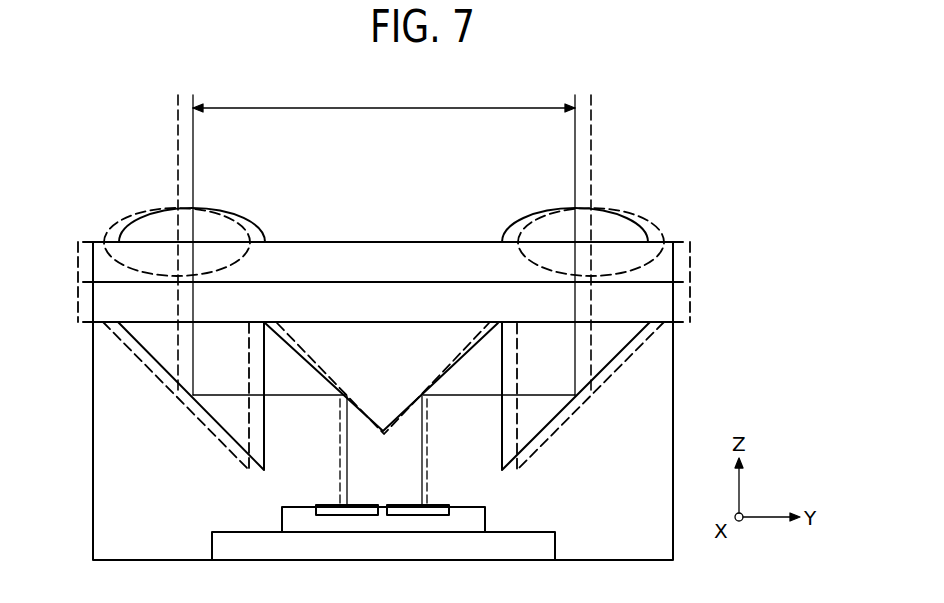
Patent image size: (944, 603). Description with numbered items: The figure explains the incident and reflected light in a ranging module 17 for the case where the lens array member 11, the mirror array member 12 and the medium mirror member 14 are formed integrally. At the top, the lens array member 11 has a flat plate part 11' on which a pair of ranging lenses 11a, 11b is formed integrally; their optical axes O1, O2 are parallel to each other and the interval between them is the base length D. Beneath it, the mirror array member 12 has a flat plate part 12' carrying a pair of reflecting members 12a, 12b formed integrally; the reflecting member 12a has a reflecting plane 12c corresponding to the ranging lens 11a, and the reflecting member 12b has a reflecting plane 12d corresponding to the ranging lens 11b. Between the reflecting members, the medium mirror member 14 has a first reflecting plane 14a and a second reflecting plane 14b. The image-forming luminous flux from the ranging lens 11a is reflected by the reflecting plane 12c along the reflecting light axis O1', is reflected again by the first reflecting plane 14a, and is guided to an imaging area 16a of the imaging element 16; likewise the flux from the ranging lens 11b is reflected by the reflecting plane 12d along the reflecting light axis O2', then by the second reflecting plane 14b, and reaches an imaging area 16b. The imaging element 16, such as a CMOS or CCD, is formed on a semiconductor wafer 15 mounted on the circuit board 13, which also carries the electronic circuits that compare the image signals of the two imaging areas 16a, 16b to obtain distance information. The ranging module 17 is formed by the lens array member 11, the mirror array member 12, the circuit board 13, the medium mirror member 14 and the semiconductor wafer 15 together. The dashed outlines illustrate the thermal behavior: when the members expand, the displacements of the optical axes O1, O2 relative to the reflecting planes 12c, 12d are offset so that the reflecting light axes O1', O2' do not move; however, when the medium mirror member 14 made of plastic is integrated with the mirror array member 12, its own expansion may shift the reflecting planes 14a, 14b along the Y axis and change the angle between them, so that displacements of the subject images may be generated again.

The lens array member 11 is at (352, 262).
The ranging lens 11a is at (160, 216).
The ranging lens 11b is at (656, 230).
The flat plate part 11' is at (384, 235).
The mirror array member 12 is at (352, 305).
The flat plate part 12' is at (407, 282).
The reflecting member 12a is at (163, 347).
The reflecting member 12b is at (605, 345).
The reflecting plane 12c is at (215, 426).
The reflecting plane 12d is at (570, 410).
The circuit board 13 is at (545, 548).
The medium mirror member 14 is at (335, 340).
The first reflecting plane 14a is at (368, 422).
The second reflecting plane 14b is at (400, 422).
The semiconductor wafer 15 is at (472, 521).
The imaging element 16 is at (273, 506).
The imaging area 16a is at (336, 503).
The imaging area 16b is at (438, 503).
The ranging module 17 is at (88, 441).
The optical axis O1 is at (220, 245).
The optical axis O2 is at (551, 245).
The reflecting light axis O1' is at (269, 370).
The reflecting light axis O2' is at (499, 370).
The base length D is at (384, 98).